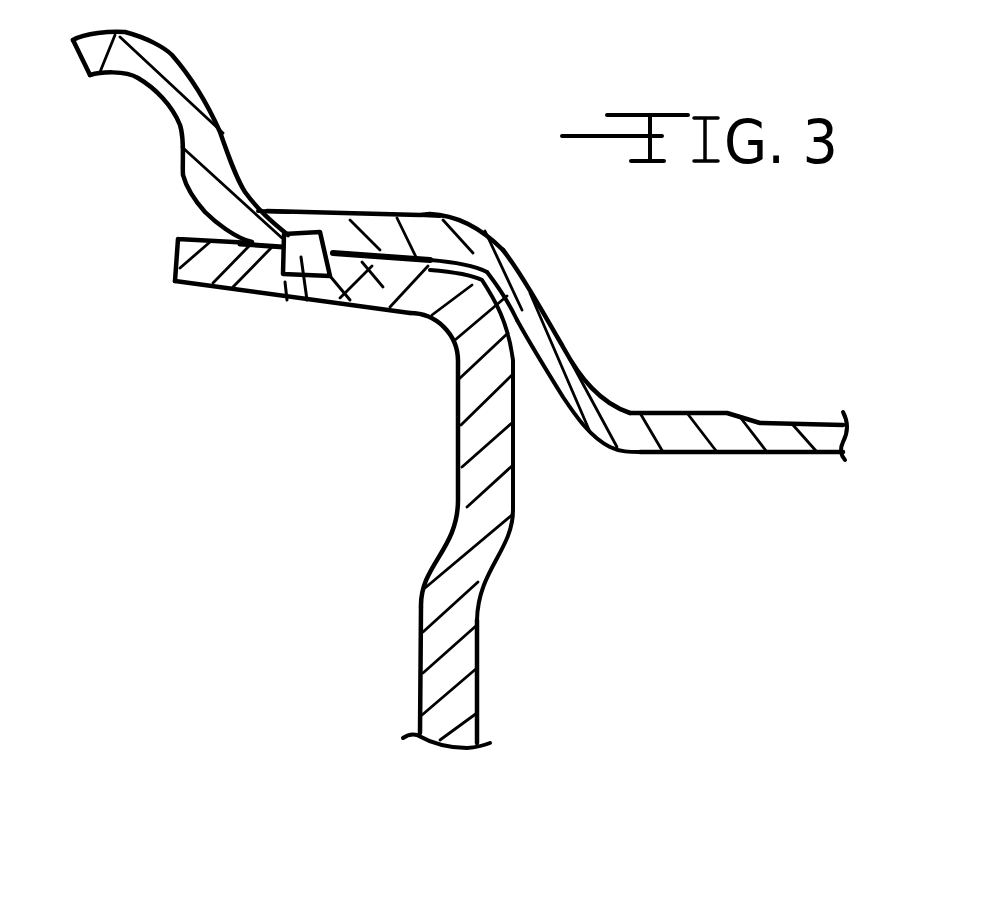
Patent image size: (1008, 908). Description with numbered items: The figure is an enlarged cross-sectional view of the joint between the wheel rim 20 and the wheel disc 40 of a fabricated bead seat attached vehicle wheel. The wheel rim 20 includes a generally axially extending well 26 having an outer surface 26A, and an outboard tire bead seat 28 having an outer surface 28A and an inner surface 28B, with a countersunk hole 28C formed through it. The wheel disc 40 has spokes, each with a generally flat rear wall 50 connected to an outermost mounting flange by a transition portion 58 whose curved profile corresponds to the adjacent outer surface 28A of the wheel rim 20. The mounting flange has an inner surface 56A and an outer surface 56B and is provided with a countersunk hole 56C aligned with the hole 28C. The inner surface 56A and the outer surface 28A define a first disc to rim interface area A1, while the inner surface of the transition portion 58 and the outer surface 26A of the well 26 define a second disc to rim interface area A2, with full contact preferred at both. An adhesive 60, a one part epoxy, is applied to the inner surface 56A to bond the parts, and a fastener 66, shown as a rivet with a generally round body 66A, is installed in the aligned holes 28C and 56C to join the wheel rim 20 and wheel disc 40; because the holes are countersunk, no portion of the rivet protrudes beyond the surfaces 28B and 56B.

The wheel rim 20 is at (557, 378).
The well 26 is at (707, 410).
The outer surface of the well 26A is at (548, 357).
The outboard tire bead seat 28 is at (293, 249).
The outer surface of the outboard tire bead seat 28A is at (233, 287).
The inner surface of the outboard tire bead seat 28B is at (265, 212).
The holes 28C is at (321, 237).
The wheel disc 40 is at (503, 647).
The rear wall 50 is at (500, 560).
The inner surface of the mounting flange 56A is at (420, 214).
The outer surface of the mounting flange 56B is at (198, 290).
The hole 56C is at (314, 258).
The transition portion 58 is at (500, 263).
The adhesive 60 is at (337, 258).
The fastener 66 is at (286, 282).
The body 66A is at (307, 285).
The first disc to rim interface area A1 is at (190, 227).
The second disc to rim interface area A2 is at (525, 398).